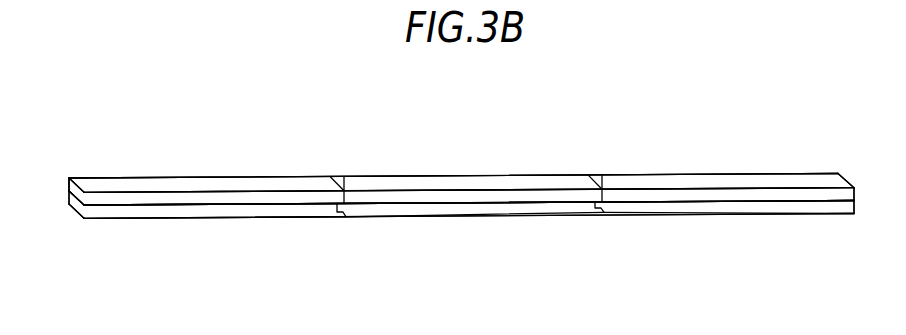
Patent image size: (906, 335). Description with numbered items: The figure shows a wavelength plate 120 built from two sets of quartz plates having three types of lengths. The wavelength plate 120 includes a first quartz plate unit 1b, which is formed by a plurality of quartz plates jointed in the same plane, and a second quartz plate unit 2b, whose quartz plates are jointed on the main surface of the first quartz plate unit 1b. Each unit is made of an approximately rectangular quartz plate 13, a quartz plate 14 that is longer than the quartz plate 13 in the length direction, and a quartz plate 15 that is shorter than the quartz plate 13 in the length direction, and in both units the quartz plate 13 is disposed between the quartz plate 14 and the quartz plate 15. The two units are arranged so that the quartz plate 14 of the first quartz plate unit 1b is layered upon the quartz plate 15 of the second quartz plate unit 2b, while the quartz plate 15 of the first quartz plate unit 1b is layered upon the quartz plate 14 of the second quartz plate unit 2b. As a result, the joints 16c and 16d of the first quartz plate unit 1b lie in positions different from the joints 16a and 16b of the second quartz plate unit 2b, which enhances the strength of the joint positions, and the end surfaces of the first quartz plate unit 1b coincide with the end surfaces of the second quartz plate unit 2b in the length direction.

The wavelength plate 120 is at (838, 74).
The second quartz plate unit 2b is at (453, 166).
The first quartz plate unit 1b is at (422, 234).
The quartz plate 14 is at (222, 178).
The quartz plate 13 is at (520, 183).
The quartz plate 15 is at (723, 180).
The joint 16a is at (347, 183).
The joint 16b is at (602, 177).
The joint 16c is at (346, 212).
The joint 16d is at (606, 212).